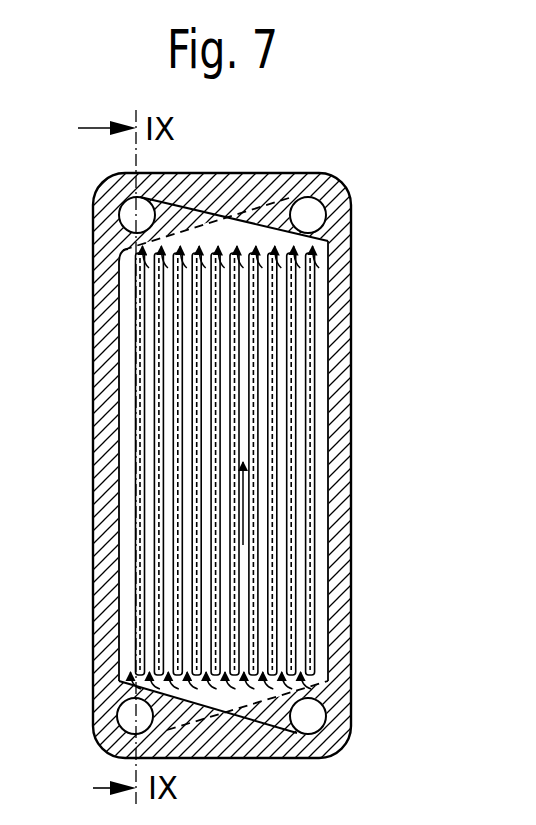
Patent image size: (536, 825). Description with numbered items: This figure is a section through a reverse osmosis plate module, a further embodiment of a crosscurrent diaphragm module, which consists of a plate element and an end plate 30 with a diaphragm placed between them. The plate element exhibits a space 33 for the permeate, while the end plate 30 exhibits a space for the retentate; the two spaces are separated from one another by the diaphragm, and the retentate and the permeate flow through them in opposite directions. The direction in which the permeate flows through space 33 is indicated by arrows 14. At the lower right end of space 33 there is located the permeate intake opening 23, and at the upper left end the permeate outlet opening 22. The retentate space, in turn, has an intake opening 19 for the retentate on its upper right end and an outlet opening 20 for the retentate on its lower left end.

The arrow 14 is at (242, 513).
The intake opening 19 is at (314, 215).
The outlet opening 20 is at (133, 717).
The permeate outlet opening 22 is at (132, 215).
The permeate intake opening 23 is at (312, 712).
The end plate 30 is at (335, 575).
The space 33 is at (280, 550).